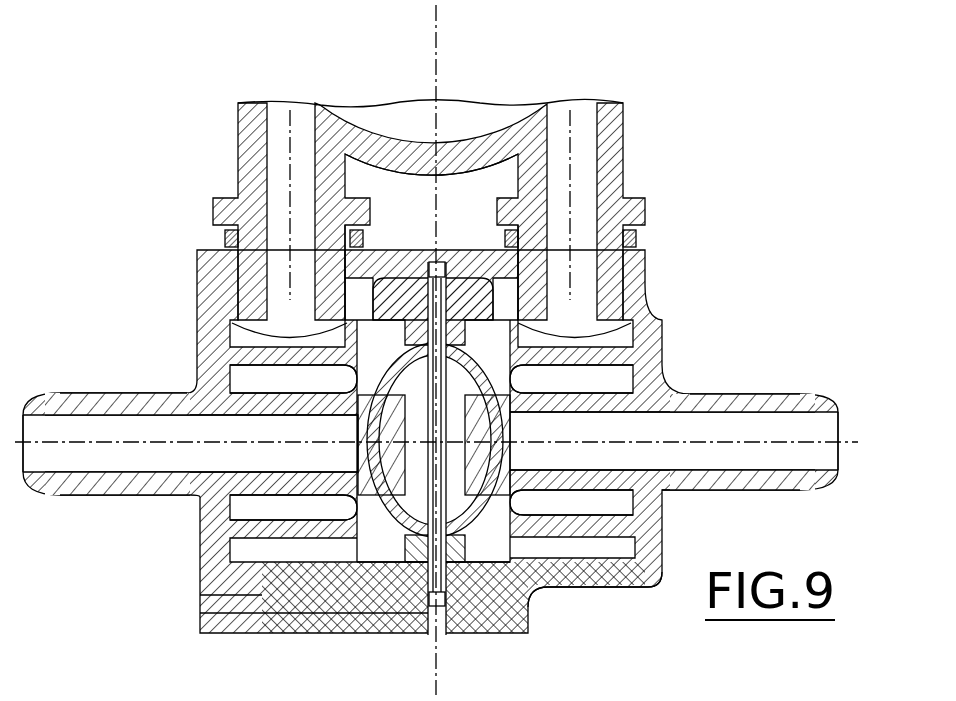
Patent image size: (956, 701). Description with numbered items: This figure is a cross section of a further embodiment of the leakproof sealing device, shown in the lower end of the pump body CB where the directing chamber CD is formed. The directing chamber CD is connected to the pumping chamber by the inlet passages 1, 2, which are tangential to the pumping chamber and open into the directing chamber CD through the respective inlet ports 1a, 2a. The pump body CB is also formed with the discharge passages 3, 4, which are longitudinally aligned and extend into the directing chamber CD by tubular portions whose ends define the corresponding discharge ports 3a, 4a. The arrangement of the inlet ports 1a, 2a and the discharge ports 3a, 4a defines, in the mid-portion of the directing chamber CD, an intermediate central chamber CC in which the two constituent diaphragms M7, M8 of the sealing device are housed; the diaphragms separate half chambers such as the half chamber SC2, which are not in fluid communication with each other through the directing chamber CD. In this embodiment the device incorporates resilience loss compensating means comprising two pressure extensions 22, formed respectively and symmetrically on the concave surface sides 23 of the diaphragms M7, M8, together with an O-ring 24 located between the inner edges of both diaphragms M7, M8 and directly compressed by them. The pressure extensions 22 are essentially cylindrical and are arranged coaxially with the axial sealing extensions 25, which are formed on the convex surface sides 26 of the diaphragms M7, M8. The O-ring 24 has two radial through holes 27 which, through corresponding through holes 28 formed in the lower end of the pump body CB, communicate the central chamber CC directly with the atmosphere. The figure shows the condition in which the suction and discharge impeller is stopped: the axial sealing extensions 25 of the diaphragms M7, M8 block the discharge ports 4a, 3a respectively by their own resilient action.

The inlet passage 1 is at (275, 127).
The inlet port 1a is at (228, 240).
The inlet passage 2 is at (580, 170).
The inlet port 2a is at (600, 294).
The discharge passage 3 is at (508, 112).
The discharge port 3a is at (627, 587).
The discharge passage 4 is at (123, 480).
The discharge port 4a is at (355, 494).
The pressure extension 22 is at (560, 362).
The concave surface side 23 is at (545, 318).
The O-ring 24 is at (478, 588).
The axial sealing extension 25 is at (512, 425).
The convex surface side 26 is at (533, 580).
The radial through hole 27 is at (450, 598).
The through hole 28 is at (437, 623).
The pump body CB is at (740, 118).
The central chamber CC is at (200, 396).
The directing chamber CD is at (613, 500).
The half chamber SC2 is at (270, 350).
The diaphragm M7 is at (385, 530).
The diaphragm M8 is at (497, 578).